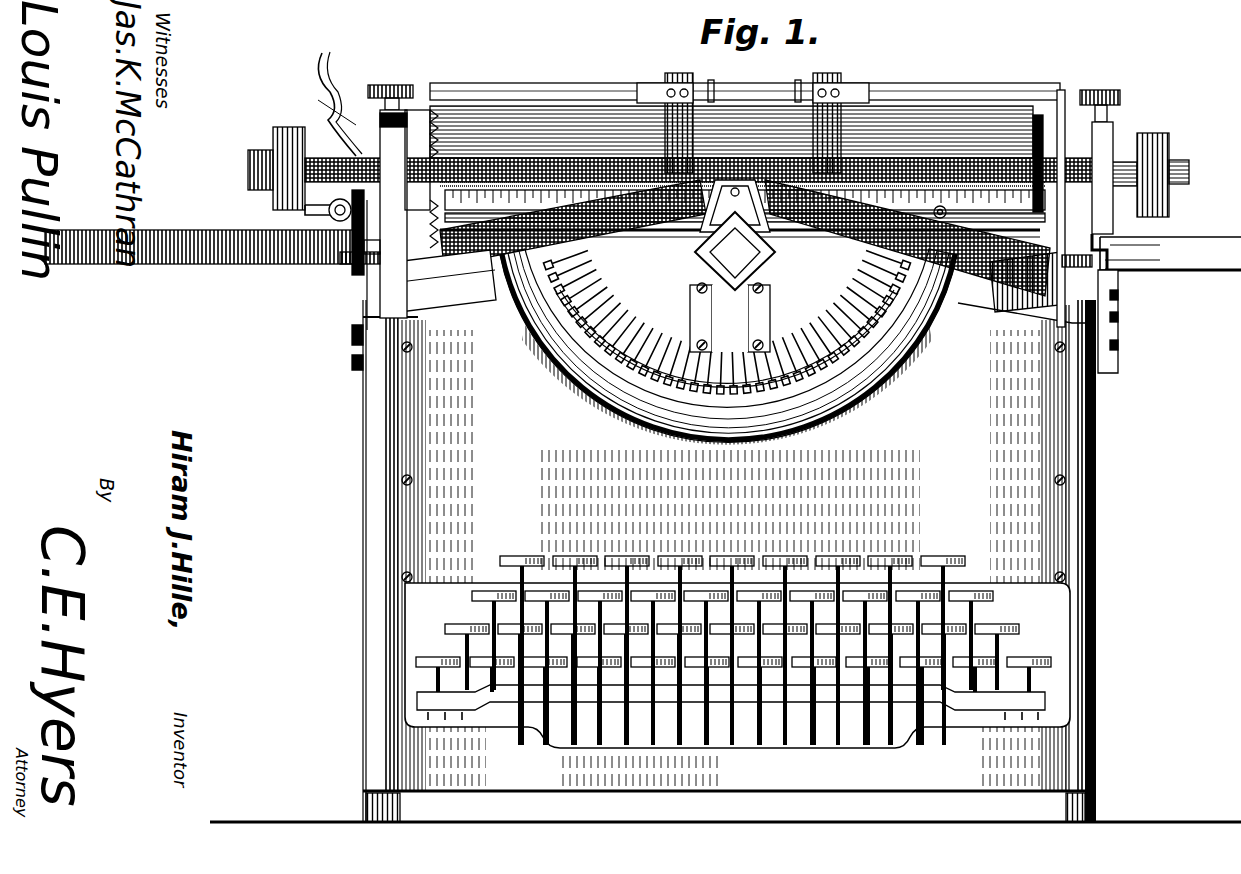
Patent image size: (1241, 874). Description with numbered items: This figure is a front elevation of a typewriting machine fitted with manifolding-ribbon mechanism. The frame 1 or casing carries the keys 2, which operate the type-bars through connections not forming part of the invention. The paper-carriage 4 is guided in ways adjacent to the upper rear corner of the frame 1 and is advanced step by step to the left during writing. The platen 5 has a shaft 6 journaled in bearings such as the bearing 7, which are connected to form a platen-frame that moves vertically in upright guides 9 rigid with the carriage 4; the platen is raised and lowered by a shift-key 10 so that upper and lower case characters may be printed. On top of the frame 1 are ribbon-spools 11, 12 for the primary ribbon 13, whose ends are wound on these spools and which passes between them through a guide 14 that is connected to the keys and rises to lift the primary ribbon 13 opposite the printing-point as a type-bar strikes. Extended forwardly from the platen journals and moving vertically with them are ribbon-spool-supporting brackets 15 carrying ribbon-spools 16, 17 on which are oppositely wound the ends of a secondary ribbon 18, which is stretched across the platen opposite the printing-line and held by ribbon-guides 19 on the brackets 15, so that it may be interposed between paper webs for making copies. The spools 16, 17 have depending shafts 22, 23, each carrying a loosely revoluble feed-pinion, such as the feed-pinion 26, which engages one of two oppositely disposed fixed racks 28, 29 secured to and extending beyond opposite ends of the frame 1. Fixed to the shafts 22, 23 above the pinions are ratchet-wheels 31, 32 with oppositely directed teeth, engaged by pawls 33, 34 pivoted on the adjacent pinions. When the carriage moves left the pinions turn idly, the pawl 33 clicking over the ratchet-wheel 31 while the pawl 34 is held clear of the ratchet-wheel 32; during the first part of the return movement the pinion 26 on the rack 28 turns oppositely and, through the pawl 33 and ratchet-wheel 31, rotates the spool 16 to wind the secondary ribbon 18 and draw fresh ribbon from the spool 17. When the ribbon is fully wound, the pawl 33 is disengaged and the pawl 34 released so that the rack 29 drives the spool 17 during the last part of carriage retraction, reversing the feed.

The frame 1 is at (724, 561).
The keys 2 is at (575, 566).
The paper-carriage 4 is at (1118, 298).
The platen 5 is at (955, 118).
The shaft 6 is at (1135, 190).
The bearing 7 is at (719, 161).
The upright guides 9 is at (382, 136).
The shift-key 10 is at (422, 663).
The ribbon-spool 11 is at (445, 281).
The ribbon-spool 12 is at (947, 212).
The primary ribbon 13 is at (615, 232).
The guide 14 is at (740, 180).
The ribbon-spool-supporting brackets 15 is at (1066, 261).
The ribbon-spool 16 is at (328, 165).
The ribbon-spool 17 is at (1074, 208).
The secondary ribbon 18 is at (533, 170).
The ribbon-guides 19 is at (721, 159).
The shaft 22 is at (330, 215).
The shaft 23 is at (1135, 245).
The feed-pinion 26 is at (355, 265).
The rack 28 is at (205, 265).
The rack 29 is at (1195, 262).
The ratchet-wheel 31 is at (375, 246).
The ratchet-wheel 32 is at (1040, 282).
The pawl 33 is at (364, 282).
The pawl 34 is at (1134, 261).